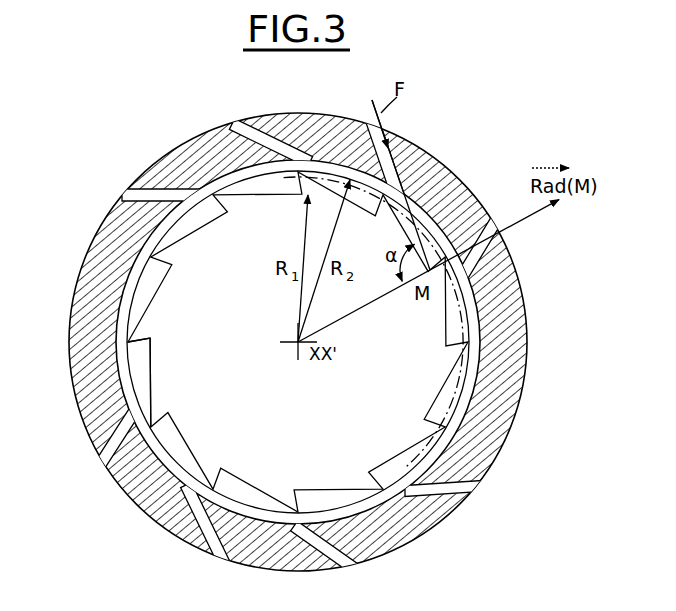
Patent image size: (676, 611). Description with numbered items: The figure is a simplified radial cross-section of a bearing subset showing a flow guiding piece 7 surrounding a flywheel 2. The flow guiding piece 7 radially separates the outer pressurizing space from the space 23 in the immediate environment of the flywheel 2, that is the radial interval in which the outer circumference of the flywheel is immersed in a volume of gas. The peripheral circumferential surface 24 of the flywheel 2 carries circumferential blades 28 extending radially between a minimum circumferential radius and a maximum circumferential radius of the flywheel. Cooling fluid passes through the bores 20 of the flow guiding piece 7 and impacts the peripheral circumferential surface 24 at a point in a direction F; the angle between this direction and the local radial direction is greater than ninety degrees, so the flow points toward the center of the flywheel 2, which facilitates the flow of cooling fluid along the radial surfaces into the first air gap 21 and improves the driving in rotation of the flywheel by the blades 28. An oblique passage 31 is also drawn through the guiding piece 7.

The flywheel 2 is at (296, 424).
The flow guiding piece 7 is at (506, 244).
The bores 20 is at (524, 357).
The first air gap 21 is at (255, 198).
The space in the immediate environment of the flywheel 23 is at (457, 416).
The peripheral circumferential surface 24 is at (155, 386).
The circumferential blades 28 is at (122, 332).
The oblique slot 31 is at (400, 140).